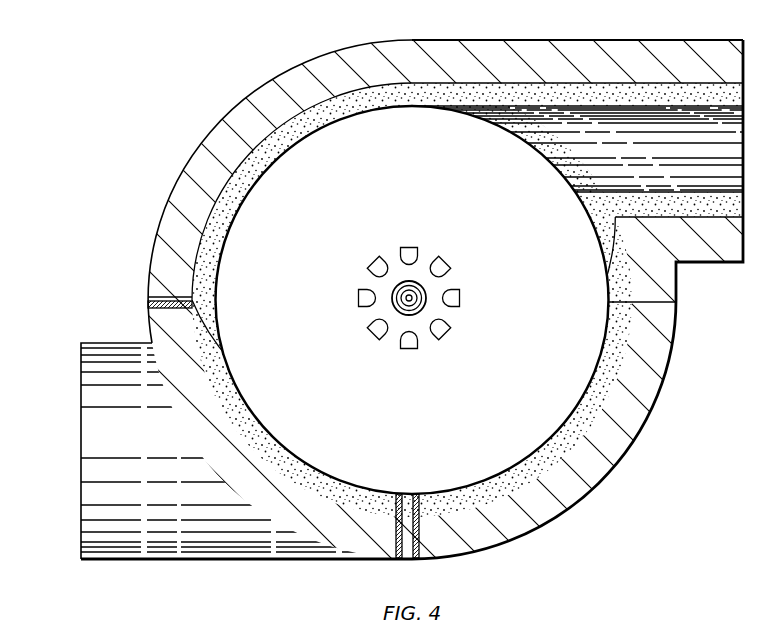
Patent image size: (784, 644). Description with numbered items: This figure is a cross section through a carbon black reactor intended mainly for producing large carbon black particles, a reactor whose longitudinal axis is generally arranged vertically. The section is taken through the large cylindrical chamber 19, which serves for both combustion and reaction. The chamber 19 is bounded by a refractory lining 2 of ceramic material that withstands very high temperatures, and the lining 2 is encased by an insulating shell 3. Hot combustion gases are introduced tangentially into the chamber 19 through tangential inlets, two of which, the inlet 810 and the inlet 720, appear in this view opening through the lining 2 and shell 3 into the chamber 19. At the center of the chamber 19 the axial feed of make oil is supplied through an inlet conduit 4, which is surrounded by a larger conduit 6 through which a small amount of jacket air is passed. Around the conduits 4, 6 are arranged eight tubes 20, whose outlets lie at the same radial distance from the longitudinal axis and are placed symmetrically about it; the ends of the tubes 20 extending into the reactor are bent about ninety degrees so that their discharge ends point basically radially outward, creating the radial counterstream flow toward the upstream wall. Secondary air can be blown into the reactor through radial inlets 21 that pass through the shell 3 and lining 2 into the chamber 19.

The refractory lining 2 is at (279, 157).
The insulating shell 3 is at (186, 168).
The inlet conduit 4 is at (412, 298).
The conduit 6 is at (393, 291).
The cylindrical chamber 19 is at (346, 408).
The tubes 20 is at (445, 265).
The radial inlets 21 is at (149, 301).
The tangential inlet 810 is at (565, 158).
The tangential inlet 720 is at (146, 450).